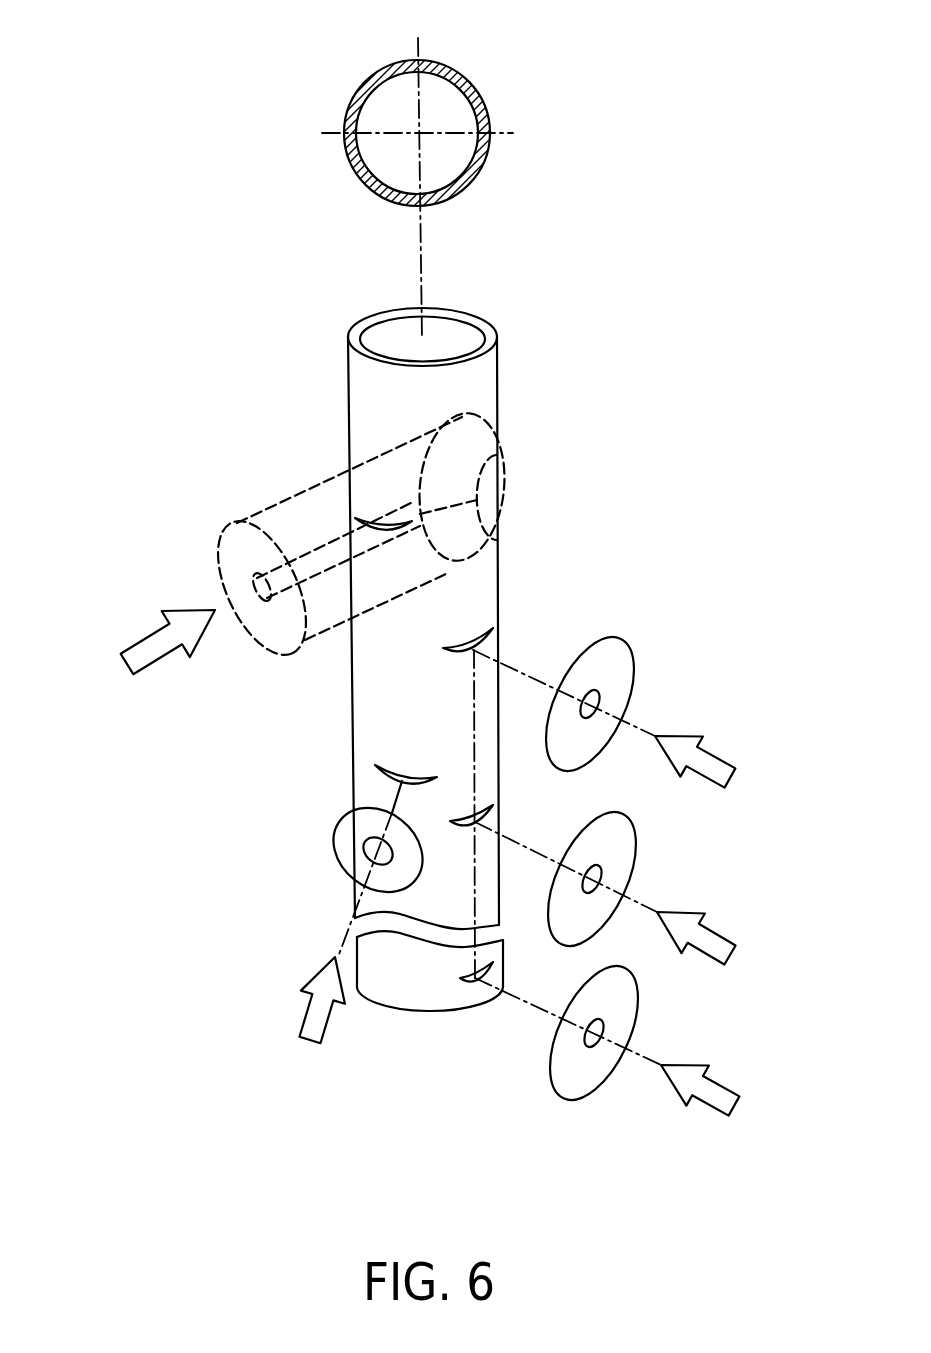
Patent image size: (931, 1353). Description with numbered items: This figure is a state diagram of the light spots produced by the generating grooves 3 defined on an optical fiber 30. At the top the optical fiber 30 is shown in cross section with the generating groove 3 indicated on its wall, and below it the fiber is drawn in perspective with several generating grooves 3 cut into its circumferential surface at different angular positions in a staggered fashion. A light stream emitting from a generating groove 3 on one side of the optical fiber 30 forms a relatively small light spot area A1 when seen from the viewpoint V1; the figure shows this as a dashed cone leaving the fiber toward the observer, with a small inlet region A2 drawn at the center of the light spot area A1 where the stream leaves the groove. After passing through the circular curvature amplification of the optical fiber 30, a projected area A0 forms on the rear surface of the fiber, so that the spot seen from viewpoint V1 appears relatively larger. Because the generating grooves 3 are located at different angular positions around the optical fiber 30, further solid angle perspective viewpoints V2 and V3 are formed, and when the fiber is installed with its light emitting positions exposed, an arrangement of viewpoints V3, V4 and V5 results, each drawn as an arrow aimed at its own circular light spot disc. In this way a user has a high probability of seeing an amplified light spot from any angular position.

The generating groove 3 is at (363, 83).
The optical fiber 30 is at (443, 113).
The projected area A0 is at (485, 418).
The light spot area A1 is at (232, 527).
The branch inlet hole A2 is at (257, 585).
The viewpoint V1 is at (148, 645).
The solid angle perspective viewpoint V2 is at (352, 911).
The solid angle perspective viewpoint V3 is at (609, 706).
The viewpoint V4 is at (613, 882).
The viewpoint V5 is at (620, 1035).